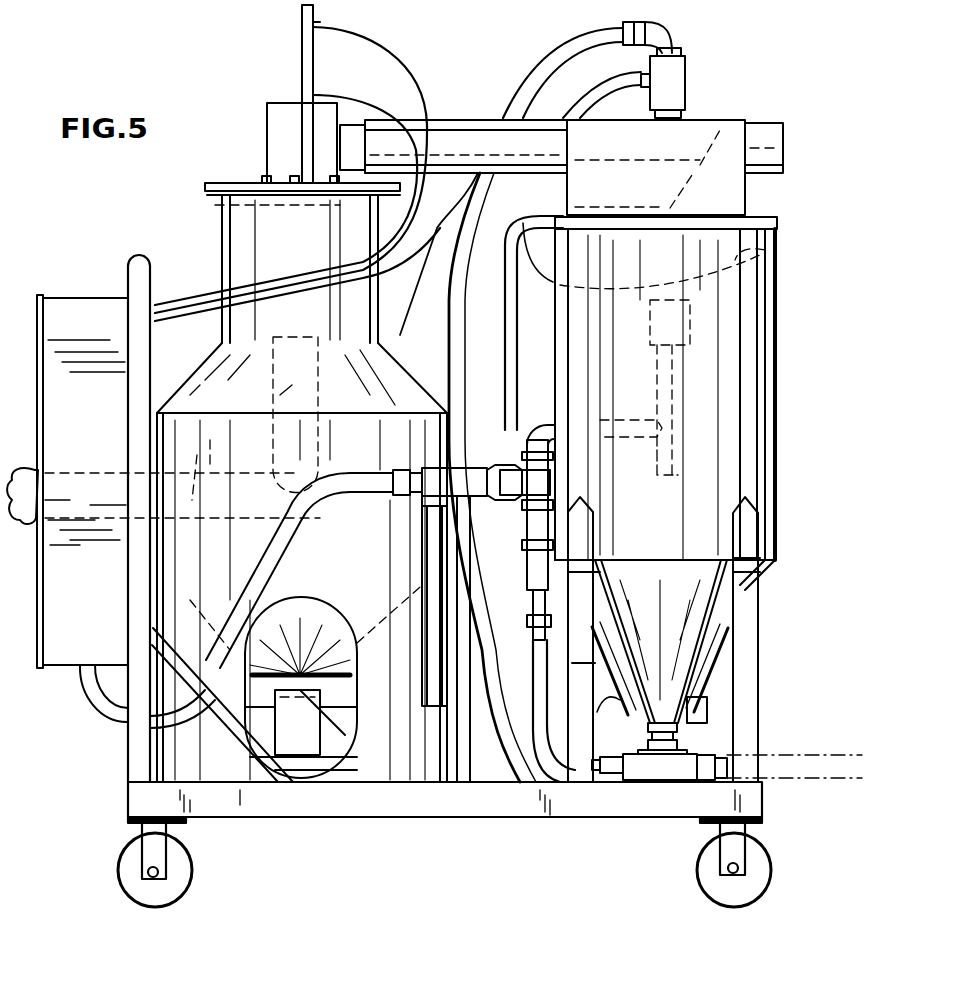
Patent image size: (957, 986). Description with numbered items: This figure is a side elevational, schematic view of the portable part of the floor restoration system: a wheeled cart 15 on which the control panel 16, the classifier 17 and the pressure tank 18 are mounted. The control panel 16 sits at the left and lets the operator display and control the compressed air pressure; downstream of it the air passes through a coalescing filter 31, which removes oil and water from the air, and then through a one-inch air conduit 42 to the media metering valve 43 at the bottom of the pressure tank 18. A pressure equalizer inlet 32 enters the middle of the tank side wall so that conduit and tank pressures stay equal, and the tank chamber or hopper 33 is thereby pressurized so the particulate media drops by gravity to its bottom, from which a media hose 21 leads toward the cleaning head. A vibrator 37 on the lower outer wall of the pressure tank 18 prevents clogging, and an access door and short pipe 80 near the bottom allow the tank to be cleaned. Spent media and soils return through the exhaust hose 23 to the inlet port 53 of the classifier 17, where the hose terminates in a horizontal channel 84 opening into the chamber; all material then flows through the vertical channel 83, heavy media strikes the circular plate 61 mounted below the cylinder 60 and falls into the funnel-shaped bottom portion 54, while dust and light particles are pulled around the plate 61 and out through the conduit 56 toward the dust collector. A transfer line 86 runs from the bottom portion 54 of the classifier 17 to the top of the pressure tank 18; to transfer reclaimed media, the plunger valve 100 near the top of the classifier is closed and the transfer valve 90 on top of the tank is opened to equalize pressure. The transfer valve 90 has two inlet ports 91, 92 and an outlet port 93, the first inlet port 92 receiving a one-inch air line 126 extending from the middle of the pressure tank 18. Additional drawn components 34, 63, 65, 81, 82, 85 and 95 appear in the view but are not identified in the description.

The portable cart 15 is at (425, 814).
The control panel 16 is at (69, 310).
The classifier 17 is at (222, 245).
The pressure tank 18 is at (771, 400).
The media hose 21 is at (788, 764).
The exhaust hose 23 is at (36, 478).
The coalescing filter 31 is at (445, 551).
The pressure equalizer inlet 32 is at (535, 435).
The chamber 33 is at (745, 500).
The hose 34 is at (262, 577).
The vibrator 37 is at (610, 672).
The air conduit 42 is at (538, 733).
The media metering valve 43 is at (662, 768).
The inlet port 53 is at (155, 540).
The bottom portion 54 is at (350, 652).
The conduit 56 is at (453, 135).
The cylinder 60 is at (268, 124).
The circular plate 61 is at (260, 208).
The pipe 63 is at (534, 544).
The bracket 65 is at (340, 750).
The access door and short pipe 80 is at (707, 702).
The hose 81 is at (416, 257).
The filter element 82 is at (690, 325).
The vertical channel 83 is at (285, 390).
The horizontal channel 84 is at (207, 467).
The hose 85 is at (180, 590).
The transfer line 86 is at (695, 134).
The transfer valve 90 is at (662, 95).
The inlet port 91 is at (640, 70).
The first inlet port 92 is at (670, 32).
The outlet port 93 is at (684, 96).
The lid 95 is at (770, 244).
The plunger valve 100 is at (353, 120).
The air line 126 is at (584, 42).